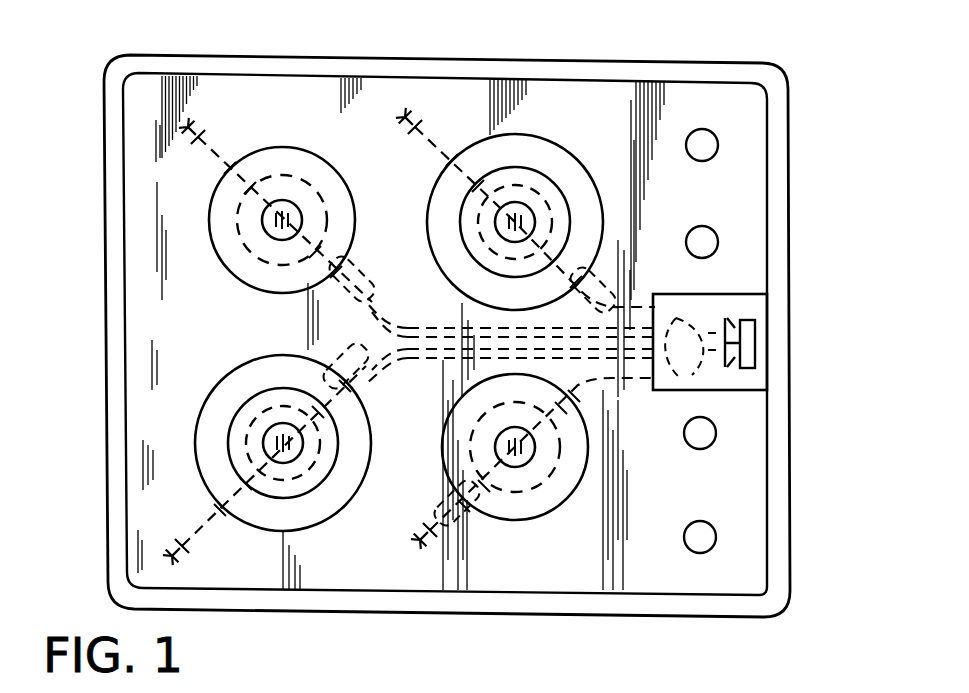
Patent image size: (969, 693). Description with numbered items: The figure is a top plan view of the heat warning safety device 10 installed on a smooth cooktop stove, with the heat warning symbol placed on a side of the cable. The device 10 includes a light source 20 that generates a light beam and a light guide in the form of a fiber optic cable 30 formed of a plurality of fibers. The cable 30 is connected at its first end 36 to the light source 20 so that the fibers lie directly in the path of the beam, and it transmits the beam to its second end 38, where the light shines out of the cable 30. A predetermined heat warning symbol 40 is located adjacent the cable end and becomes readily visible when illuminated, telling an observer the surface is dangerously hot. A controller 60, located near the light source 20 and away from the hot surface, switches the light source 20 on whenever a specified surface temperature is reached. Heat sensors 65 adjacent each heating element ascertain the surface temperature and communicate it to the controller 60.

The heat warning safety device 10 is at (733, 403).
The light source 20 is at (680, 353).
The fiber optic cable 30 is at (446, 156).
The first end of the fiber optic cable 36 is at (647, 333).
The second end of the fiber optic cable 38 is at (170, 555).
The heat warning symbol 40 is at (270, 230).
The controller 60 is at (743, 322).
The heat sensor 65 is at (367, 258).